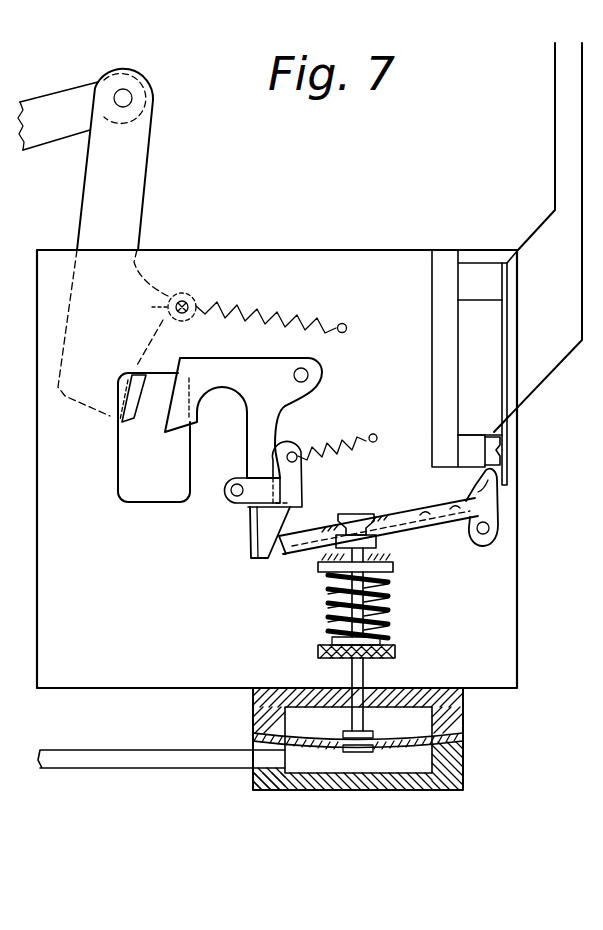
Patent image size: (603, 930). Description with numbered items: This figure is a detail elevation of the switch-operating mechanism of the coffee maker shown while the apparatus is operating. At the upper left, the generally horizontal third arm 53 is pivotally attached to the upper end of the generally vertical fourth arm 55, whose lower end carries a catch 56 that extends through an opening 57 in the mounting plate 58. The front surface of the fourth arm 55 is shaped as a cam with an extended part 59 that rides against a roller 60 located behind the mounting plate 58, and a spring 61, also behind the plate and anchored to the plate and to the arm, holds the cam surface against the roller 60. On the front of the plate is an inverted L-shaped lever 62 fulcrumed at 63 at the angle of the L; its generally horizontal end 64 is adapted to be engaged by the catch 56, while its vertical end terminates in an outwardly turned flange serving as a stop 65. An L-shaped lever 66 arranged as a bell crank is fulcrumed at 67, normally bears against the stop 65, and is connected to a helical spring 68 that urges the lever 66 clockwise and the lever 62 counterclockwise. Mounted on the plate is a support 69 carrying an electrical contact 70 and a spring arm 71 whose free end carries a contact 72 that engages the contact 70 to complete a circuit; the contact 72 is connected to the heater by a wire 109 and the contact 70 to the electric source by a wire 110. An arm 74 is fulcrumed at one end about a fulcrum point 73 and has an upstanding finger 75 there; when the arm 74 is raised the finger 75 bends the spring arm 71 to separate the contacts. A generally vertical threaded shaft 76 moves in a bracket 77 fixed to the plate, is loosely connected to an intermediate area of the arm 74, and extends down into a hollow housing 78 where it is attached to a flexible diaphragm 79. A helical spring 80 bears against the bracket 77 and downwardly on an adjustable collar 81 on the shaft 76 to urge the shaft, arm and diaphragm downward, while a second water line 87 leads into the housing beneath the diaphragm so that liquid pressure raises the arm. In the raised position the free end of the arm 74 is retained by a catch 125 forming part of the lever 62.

The third arm 53 is at (60, 96).
The fourth arm 55 is at (127, 182).
The catch 56 is at (122, 415).
The opening 57 is at (143, 505).
The mounting plate 58 is at (37, 540).
The extended part 59 is at (158, 292).
The roller 60 is at (194, 301).
The spring 61 is at (232, 312).
The lever 62 is at (268, 402).
The fulcrum 63 is at (308, 375).
The end of lever 64 is at (226, 350).
The stop 65 is at (252, 538).
The L-shaped lever 66 is at (306, 482).
The fulcrum 67 is at (236, 495).
The helical spring 68 is at (351, 440).
The support 69 is at (432, 298).
The electrical contact 70 is at (508, 428).
The spring arm 71 is at (502, 342).
The contact 72 is at (500, 450).
The fulcrum point 73 is at (481, 540).
The arm 74 is at (398, 549).
The upstanding finger 75 is at (498, 492).
The shaft 76 is at (366, 673).
The bracket 77 is at (318, 567).
The hollow housing 78 is at (253, 714).
The flexible diaphragm 79 is at (289, 742).
The helical spring 80 is at (390, 604).
The adjustable collar 81 is at (396, 650).
The second water line 87 is at (118, 752).
The wire 109 is at (555, 103).
The wire 110 is at (582, 128).
The catch 125 is at (292, 496).